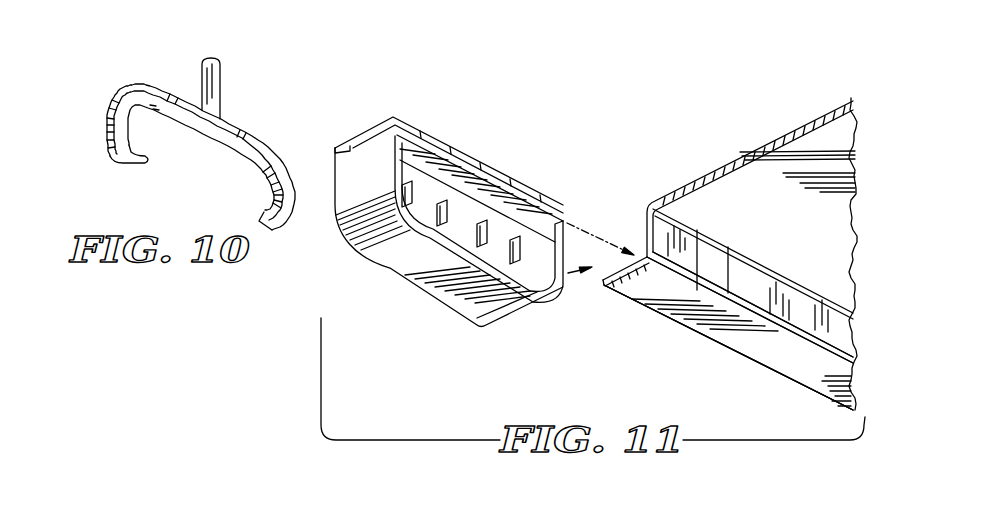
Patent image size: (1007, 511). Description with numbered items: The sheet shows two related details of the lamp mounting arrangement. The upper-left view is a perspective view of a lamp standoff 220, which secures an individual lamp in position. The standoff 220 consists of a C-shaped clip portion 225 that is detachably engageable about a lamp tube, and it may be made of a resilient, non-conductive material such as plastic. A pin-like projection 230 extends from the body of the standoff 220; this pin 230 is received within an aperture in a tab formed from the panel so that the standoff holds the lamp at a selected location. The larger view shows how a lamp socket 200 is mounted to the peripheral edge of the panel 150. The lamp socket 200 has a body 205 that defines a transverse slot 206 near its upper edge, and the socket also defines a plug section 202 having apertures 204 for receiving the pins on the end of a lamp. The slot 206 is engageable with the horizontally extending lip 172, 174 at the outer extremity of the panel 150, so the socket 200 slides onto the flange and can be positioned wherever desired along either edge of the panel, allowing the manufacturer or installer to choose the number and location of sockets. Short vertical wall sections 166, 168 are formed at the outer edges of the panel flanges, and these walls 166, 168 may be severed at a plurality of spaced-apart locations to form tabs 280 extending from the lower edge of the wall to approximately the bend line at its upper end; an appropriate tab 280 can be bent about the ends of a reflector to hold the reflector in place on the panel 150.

In FIG. 11, the panel 150 is at (844, 224).
In FIG. 11, the short vertical wall section 166 is at (840, 332).
In FIG. 11, the short vertical wall section 168 is at (840, 332).
In FIG. 11, the lip 172 is at (740, 343).
In FIG. 11, the lip 174 is at (740, 343).
In FIG. 11, the lamp socket 200 is at (452, 189).
In FIG. 11, the plug section 202 is at (437, 192).
In FIG. 11, the aperture 204 is at (525, 252).
In FIG. 11, the body 205 is at (352, 203).
In FIG. 11, the transverse slot 206 is at (427, 140).
In FIG. 10, the standoff 220 is at (237, 127).
In FIG. 10, the C-shaped clip portion 225 is at (104, 113).
In FIG. 10, the pin-like projection 230 is at (222, 72).
In FIG. 11, the tab 280 is at (707, 252).